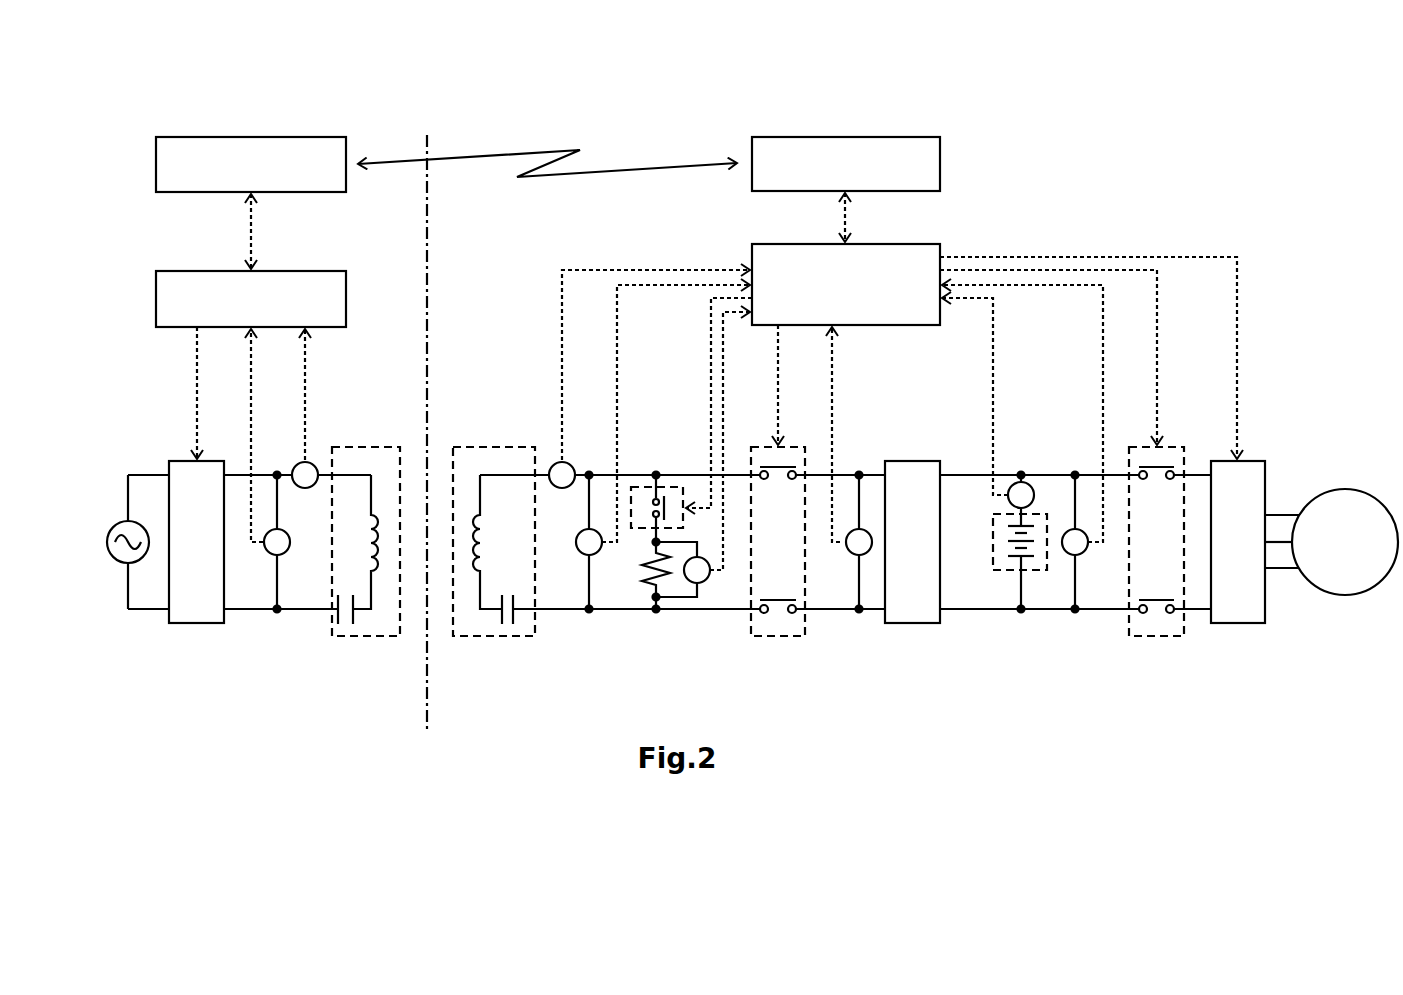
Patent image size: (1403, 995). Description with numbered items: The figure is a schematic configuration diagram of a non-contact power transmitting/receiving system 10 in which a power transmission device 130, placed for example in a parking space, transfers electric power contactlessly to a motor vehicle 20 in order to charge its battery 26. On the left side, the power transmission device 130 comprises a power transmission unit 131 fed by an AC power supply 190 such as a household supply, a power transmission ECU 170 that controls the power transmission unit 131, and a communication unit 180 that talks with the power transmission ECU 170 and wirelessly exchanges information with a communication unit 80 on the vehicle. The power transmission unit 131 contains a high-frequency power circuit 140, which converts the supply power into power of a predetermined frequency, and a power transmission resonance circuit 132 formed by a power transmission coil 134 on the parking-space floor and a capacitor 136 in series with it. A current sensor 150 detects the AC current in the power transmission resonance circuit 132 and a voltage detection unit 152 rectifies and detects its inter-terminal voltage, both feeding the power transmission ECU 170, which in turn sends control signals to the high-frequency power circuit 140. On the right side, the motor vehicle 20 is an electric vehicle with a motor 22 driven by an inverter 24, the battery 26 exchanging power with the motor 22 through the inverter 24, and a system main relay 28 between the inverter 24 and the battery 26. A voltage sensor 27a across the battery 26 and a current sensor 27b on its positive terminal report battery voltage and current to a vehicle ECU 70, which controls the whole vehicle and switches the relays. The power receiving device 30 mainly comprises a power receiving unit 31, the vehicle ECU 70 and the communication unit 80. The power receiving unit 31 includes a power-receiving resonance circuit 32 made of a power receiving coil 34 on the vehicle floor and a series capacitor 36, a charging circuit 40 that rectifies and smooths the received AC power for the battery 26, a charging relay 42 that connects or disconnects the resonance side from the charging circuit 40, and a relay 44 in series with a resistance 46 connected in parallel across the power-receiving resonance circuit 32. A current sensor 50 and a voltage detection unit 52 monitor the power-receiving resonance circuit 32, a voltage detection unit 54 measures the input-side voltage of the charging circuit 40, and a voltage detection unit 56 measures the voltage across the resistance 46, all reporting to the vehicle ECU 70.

The non-contact power transmitting/receiving system 10 is at (1157, 82).
The motor vehicle 20 is at (1101, 108).
The motor 22 is at (1344, 489).
The inverter 24 is at (1251, 461).
The battery 26 is at (1013, 571).
The voltage sensor 27a is at (1071, 556).
The current sensor 27b is at (1028, 483).
The system main relay 28 is at (1168, 447).
The power receiving device 30 is at (706, 108).
The power receiving unit 31 is at (665, 405).
The power-receiving resonance circuit 32 is at (487, 447).
The power receiving coil 34 is at (478, 572).
The capacitor 36 is at (508, 626).
The charging circuit 40 is at (927, 461).
The charging relay 42 is at (763, 447).
The relay 44 is at (670, 487).
The resistance 46 is at (652, 585).
The current sensor 50 is at (571, 462).
The voltage detection unit 52 is at (586, 556).
The voltage detection unit 54 is at (855, 556).
The voltage detection unit 56 is at (703, 584).
The vehicle ECU 70 is at (906, 244).
The communication unit 80 is at (906, 137).
The power transmission device 130 is at (366, 108).
The power transmission unit 131 is at (323, 392).
The power transmission resonance circuit 132 is at (353, 447).
The power transmission coil 134 is at (376, 572).
The capacitor 136 is at (344, 628).
The high-frequency power circuit 140 is at (199, 625).
The current sensor 150 is at (296, 464).
The voltage detection unit 152 is at (277, 556).
The power transmission ECU 170 is at (299, 271).
The communication unit 180 is at (299, 137).
The AC power supply 190 is at (125, 523).